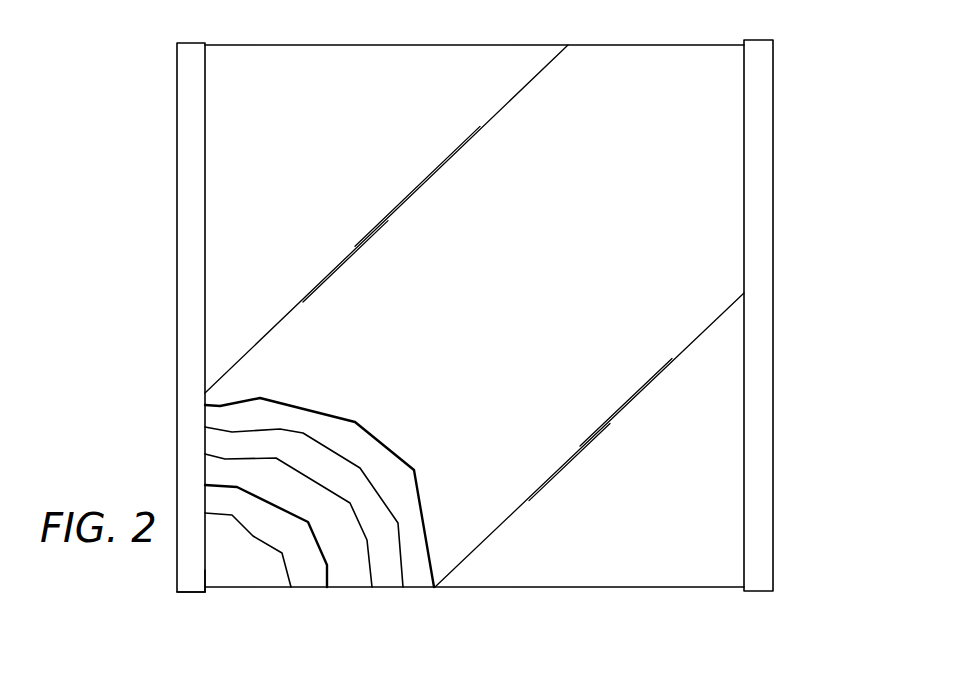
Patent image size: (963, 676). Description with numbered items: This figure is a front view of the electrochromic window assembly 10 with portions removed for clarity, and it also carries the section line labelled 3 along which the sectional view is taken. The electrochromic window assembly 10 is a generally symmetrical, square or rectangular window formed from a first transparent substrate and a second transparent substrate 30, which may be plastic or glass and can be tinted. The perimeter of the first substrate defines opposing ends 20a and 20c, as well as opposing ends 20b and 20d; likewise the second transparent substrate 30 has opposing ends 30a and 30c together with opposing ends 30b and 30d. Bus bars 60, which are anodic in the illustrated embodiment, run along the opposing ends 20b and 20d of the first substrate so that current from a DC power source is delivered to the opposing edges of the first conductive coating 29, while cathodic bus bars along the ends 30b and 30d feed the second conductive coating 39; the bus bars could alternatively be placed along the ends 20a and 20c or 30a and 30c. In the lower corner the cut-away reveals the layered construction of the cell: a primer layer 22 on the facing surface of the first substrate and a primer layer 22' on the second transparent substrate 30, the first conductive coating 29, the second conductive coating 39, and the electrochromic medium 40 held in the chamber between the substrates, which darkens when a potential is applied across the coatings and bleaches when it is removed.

The electrochromic window assembly 10 is at (473, 321).
The end of first substrate 20a is at (474, 31).
The end of second substrate 30a is at (250, 44).
The end of first substrate 20b is at (120, 317).
The end of second substrate 30b is at (176, 252).
The end of first substrate 20c is at (567, 588).
The end of first substrate 20d is at (827, 315).
The end of second substrate 30d is at (772, 145).
The bus bars 60 is at (473, 316).
The second transparent substrate 30 is at (217, 592).
The end of second substrate 30c is at (233, 590).
The primer layer 22 is at (328, 521).
The primer layer 22' is at (248, 575).
The first conductive coating 29 is at (393, 567).
The second conductive coating 39 is at (314, 562).
The electrochromic medium 40 is at (356, 565).
The section line 3- 3 is at (702, 237).